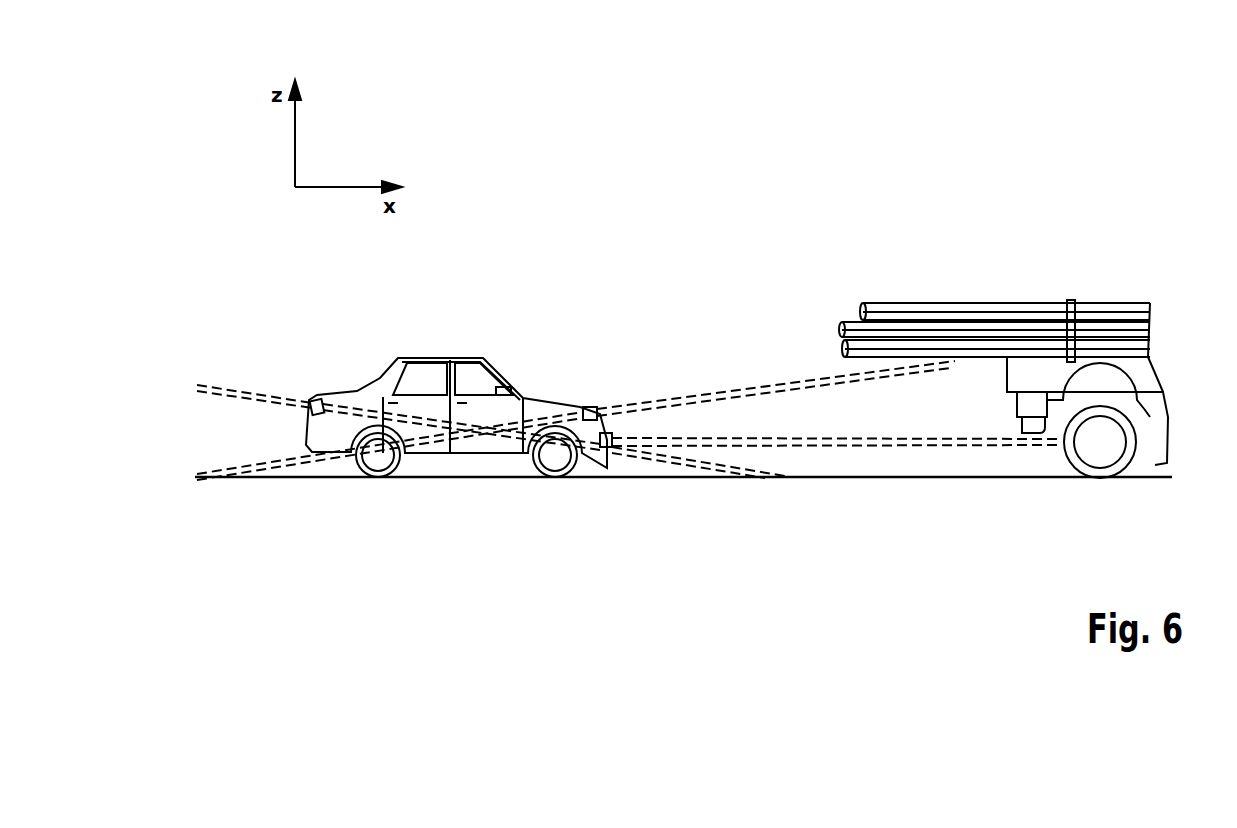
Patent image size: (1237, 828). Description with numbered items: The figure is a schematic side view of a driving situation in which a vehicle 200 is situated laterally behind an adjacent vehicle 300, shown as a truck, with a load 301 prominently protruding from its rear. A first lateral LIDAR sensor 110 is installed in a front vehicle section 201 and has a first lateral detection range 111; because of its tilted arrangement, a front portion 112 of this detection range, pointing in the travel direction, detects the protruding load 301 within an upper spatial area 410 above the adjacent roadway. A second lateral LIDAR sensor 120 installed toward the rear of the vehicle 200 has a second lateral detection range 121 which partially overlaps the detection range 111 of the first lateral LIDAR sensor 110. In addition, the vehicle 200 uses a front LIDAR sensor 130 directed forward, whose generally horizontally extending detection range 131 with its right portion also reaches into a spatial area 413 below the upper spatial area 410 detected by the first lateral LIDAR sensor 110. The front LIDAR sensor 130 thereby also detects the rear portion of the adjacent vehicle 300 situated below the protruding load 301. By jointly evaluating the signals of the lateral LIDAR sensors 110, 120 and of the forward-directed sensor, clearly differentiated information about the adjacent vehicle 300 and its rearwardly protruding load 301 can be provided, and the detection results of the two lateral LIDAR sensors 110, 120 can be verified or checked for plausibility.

The first lateral LIDAR sensor 110 is at (588, 406).
The first lateral detection range 111 is at (695, 397).
The front portion of detection range 112 is at (879, 373).
The second lateral LIDAR sensor 120 is at (312, 399).
The second lateral detection range 121 is at (230, 384).
The front LIDAR sensor 130 is at (606, 455).
The detection range of front LIDAR sensor 131 is at (818, 447).
The vehicle 200 is at (432, 376).
The front vehicle section 201 is at (546, 368).
The adjacent vehicle 300 is at (1003, 327).
The protruding load 301 is at (918, 304).
The upper spatial area 410 is at (975, 358).
The spatial area below upper spatial area 413 is at (960, 462).